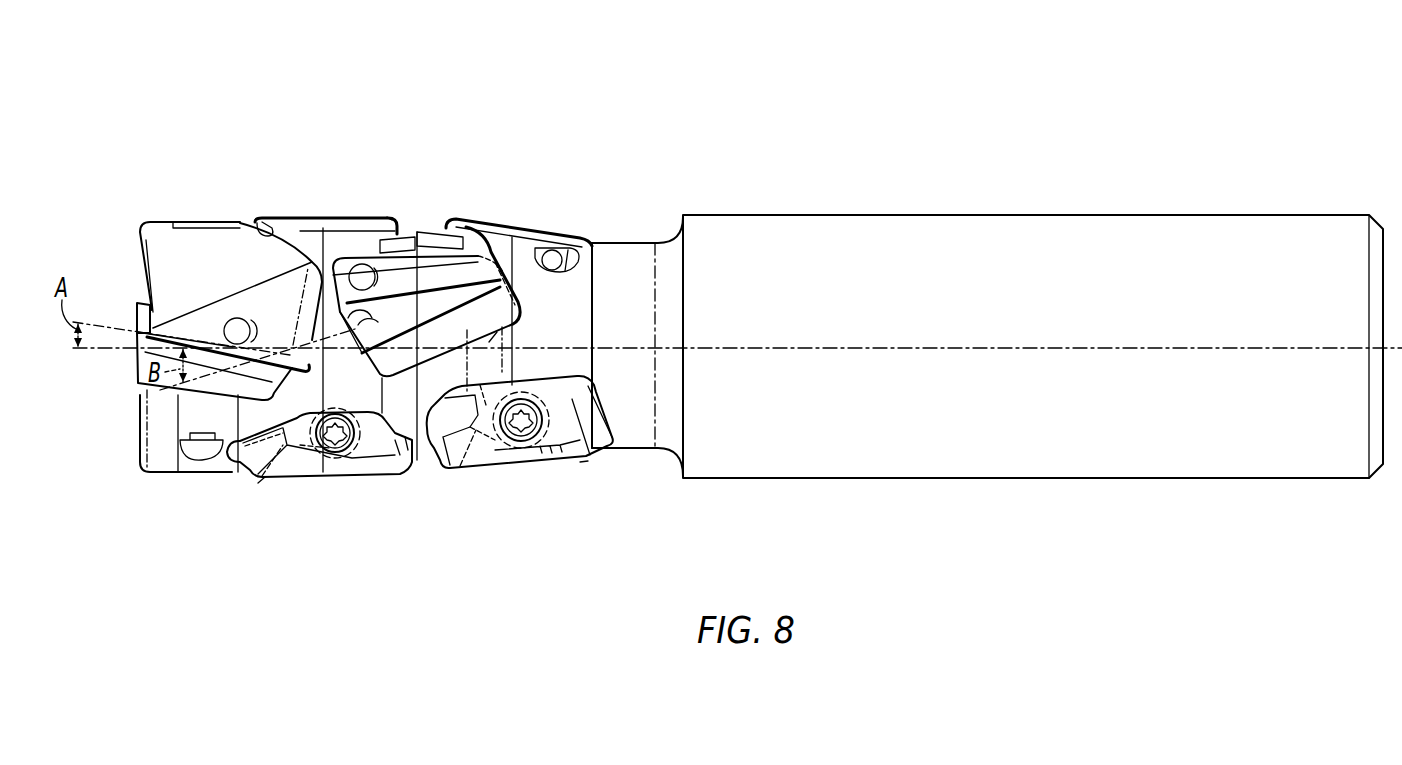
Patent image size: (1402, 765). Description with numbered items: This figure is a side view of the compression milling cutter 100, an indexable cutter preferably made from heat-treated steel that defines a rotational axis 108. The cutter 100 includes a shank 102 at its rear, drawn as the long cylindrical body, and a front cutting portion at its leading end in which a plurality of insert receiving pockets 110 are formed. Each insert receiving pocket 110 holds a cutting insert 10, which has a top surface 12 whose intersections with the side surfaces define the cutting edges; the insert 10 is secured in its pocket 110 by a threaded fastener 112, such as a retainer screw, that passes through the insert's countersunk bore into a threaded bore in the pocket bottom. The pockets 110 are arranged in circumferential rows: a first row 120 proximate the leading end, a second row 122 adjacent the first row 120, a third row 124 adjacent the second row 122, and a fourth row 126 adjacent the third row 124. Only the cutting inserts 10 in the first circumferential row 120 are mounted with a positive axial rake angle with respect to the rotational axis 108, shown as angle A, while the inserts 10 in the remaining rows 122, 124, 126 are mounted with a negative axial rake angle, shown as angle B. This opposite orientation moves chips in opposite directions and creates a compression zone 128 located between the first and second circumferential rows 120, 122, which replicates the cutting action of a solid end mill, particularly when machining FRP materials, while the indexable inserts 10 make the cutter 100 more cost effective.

The cutting insert 10 is at (368, 215).
The top surface 12 is at (296, 444).
The compression milling cutter 100 is at (737, 285).
The shank 102 is at (1100, 450).
The rotational axis 108 is at (88, 350).
The insert receiving pocket 110 is at (388, 215).
The threaded fastener 112 is at (336, 455).
The first circumferential row 120 is at (165, 203).
The second circumferential row 122 is at (322, 196).
The third circumferential row 124 is at (427, 197).
The fourth circumferential row 126 is at (538, 212).
The compression zone 128 is at (298, 211).